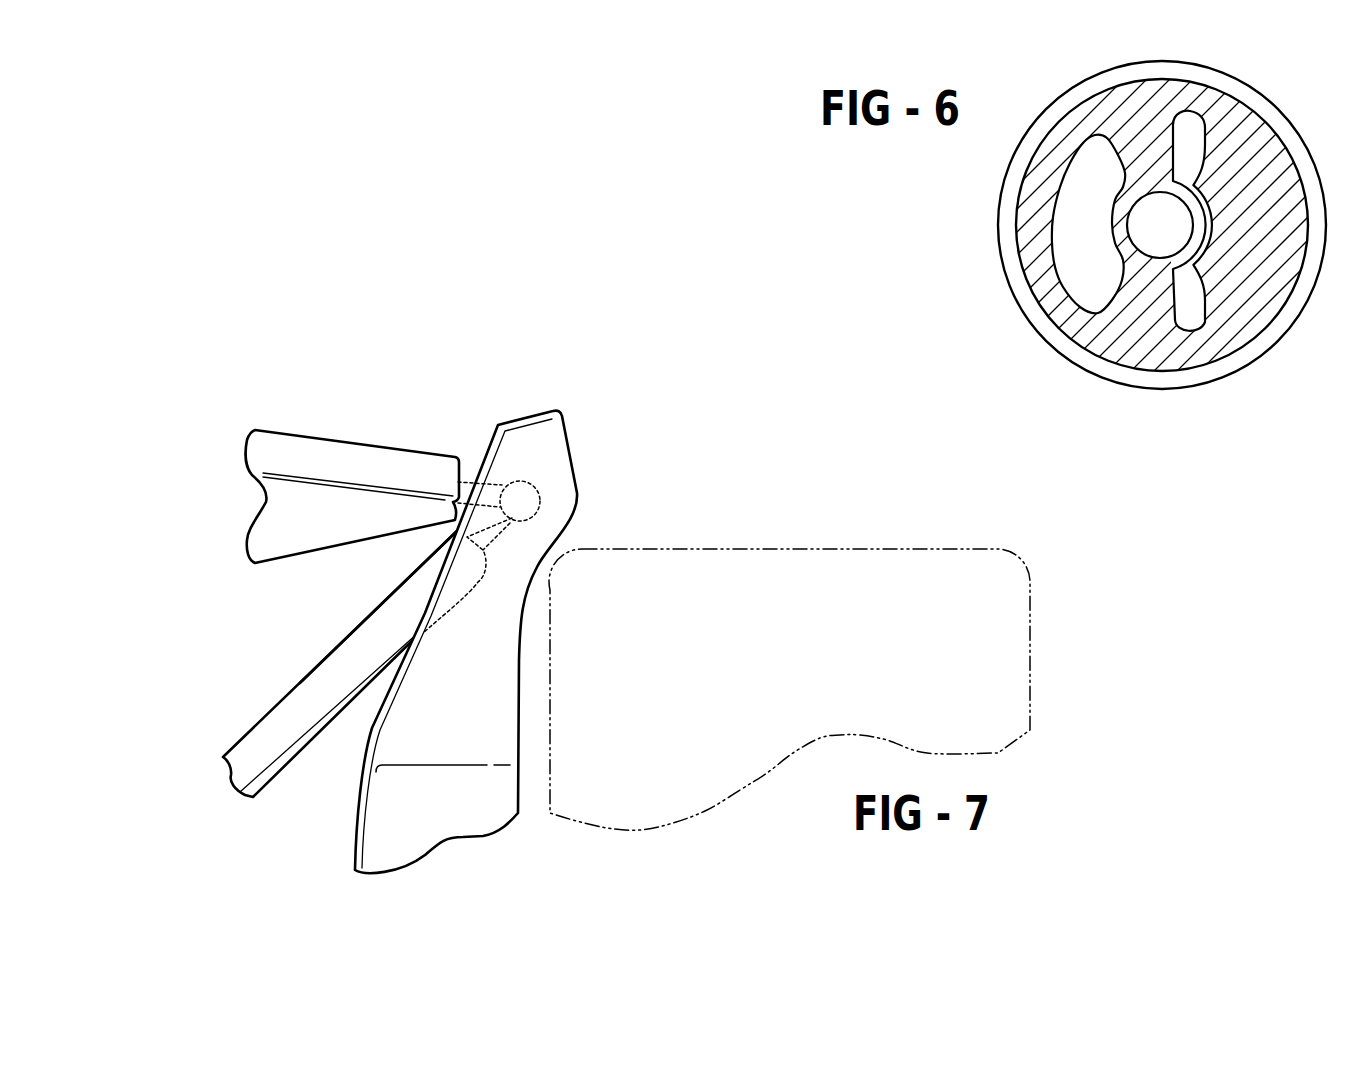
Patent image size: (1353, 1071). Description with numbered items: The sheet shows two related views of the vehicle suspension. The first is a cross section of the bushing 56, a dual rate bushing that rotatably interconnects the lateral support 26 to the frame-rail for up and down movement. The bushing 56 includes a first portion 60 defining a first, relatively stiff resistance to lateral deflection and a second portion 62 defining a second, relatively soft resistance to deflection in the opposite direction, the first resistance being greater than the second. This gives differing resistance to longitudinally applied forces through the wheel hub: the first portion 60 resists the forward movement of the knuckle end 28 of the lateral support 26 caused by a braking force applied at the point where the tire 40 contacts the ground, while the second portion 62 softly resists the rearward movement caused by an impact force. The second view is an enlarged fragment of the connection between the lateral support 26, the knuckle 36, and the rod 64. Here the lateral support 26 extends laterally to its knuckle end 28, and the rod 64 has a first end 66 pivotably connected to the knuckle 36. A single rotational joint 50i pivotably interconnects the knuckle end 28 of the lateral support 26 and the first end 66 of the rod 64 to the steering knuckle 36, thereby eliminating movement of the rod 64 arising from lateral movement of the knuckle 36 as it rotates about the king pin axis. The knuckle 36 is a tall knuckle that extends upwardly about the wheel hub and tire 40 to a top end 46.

In FIG. 7, the lateral support 26 is at (278, 432).
In FIG. 7, the knuckle end 28 is at (382, 447).
In FIG. 7, the knuckle 36 is at (453, 823).
In FIG. 7, the tire 40 is at (628, 549).
In FIG. 7, the top end 46 is at (517, 422).
In FIG. 7, the single rotational joint 50i is at (540, 498).
In FIG. 6, the bushing 56 is at (1162, 62).
In FIG. 6, the first portion 60 is at (1208, 152).
In FIG. 6, the second portion 62 is at (1050, 211).
In FIG. 7, the rod 64 is at (300, 683).
In FIG. 7, the first end 66 is at (368, 618).